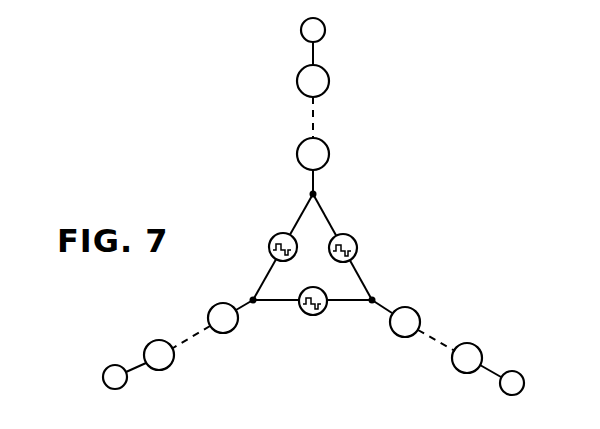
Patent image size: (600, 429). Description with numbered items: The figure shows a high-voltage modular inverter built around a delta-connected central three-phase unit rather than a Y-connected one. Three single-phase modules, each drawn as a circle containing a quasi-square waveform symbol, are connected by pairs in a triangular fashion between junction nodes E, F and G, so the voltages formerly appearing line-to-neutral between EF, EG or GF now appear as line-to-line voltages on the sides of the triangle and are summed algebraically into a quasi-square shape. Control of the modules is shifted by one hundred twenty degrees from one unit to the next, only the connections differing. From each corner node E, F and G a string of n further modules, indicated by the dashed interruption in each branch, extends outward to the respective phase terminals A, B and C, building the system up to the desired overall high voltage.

The phase line terminal A is at (313, 41).
The phase line terminal B is at (448, 347).
The phase line terminal C is at (178, 344).
The junction node E is at (309, 194).
The junction node F is at (373, 297).
The junction node G is at (251, 297).
The number of modules per phase string n is at (279, 126).